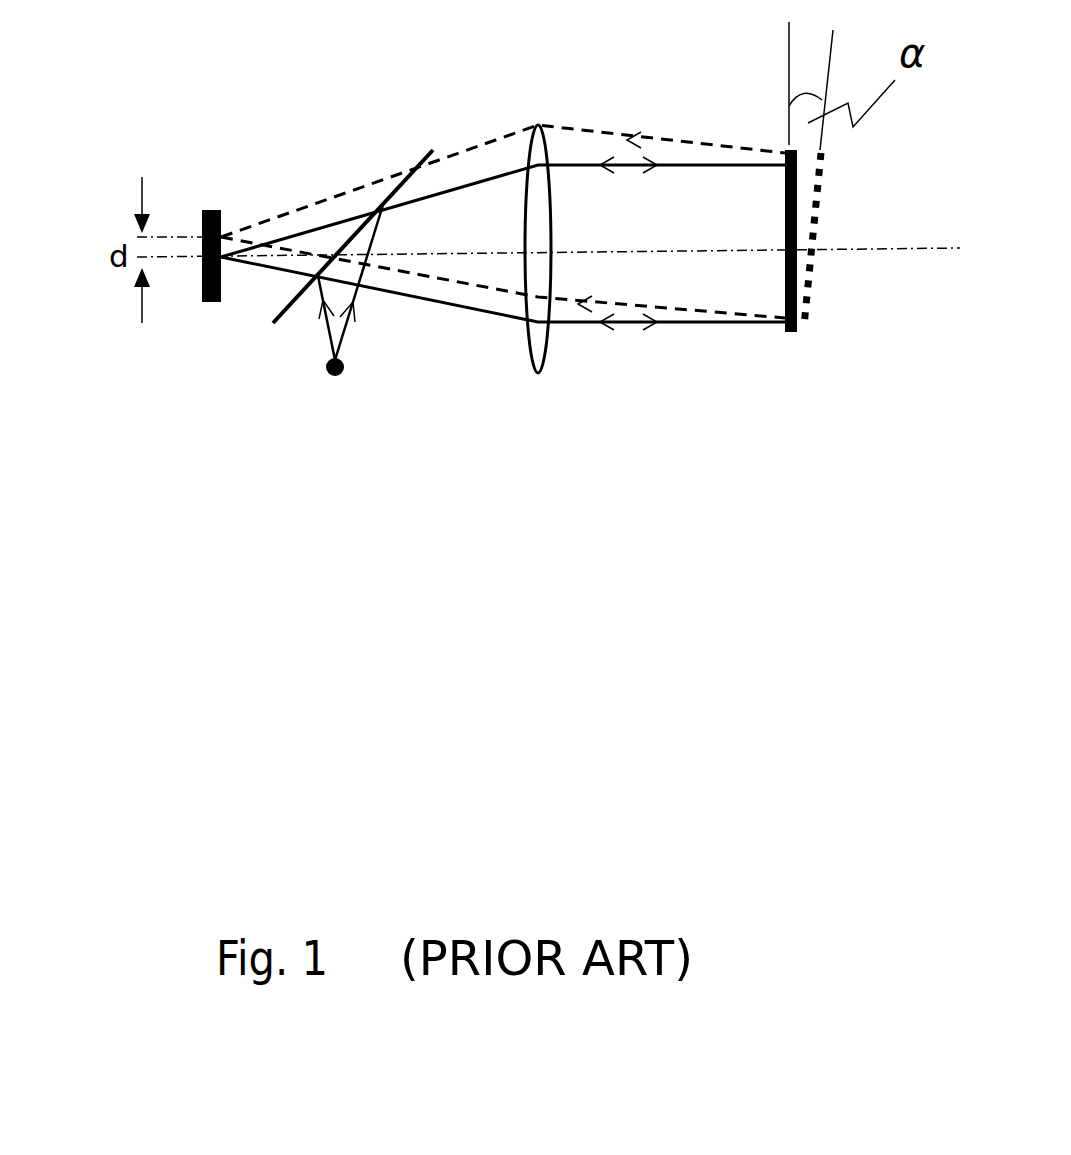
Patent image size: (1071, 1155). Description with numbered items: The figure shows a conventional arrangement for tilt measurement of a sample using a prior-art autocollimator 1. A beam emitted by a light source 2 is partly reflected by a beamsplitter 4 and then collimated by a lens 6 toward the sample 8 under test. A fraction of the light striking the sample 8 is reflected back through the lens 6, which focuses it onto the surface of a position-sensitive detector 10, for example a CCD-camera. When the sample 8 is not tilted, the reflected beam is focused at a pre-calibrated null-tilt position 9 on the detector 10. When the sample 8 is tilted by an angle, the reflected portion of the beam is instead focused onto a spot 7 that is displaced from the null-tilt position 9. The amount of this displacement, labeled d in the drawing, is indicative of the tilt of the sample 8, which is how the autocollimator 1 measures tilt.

The autocollimator 1 is at (240, 537).
The light source 2 is at (325, 382).
The beamsplitter 4 is at (428, 147).
The lens 6 is at (537, 362).
The spot 7 is at (221, 228).
The sample 8 is at (798, 343).
The null-tilt position 9 is at (225, 267).
The position-sensitive detector 10 is at (207, 208).